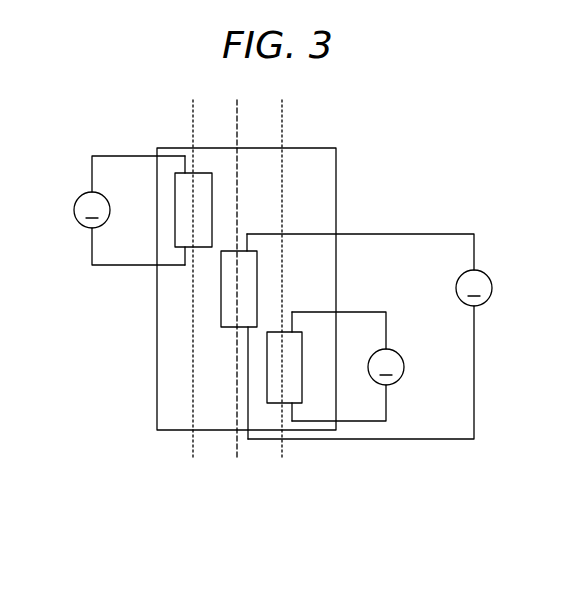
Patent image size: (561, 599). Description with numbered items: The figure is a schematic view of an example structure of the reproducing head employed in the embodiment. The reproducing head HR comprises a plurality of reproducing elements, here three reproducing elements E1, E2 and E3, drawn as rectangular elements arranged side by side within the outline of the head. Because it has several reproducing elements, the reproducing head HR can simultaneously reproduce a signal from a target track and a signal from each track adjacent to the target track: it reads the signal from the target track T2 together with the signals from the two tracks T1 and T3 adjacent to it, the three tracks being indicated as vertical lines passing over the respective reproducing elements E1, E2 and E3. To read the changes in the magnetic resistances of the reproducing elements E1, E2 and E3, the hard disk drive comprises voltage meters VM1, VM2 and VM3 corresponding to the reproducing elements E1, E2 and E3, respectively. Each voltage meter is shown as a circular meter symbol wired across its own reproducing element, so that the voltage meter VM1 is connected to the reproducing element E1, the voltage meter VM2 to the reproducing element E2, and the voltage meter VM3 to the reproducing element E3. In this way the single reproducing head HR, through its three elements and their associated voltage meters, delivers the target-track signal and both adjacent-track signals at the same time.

The reproducing head HR is at (337, 165).
The adjacent track T1 is at (195, 112).
The target track T2 is at (240, 112).
The adjacent track T3 is at (285, 112).
The reproducing element E1 is at (206, 172).
The reproducing element E2 is at (236, 336).
The reproducing element E3 is at (302, 344).
The voltage meter VM1 is at (73, 210).
The voltage meter VM2 is at (493, 288).
The voltage meter VM3 is at (405, 368).